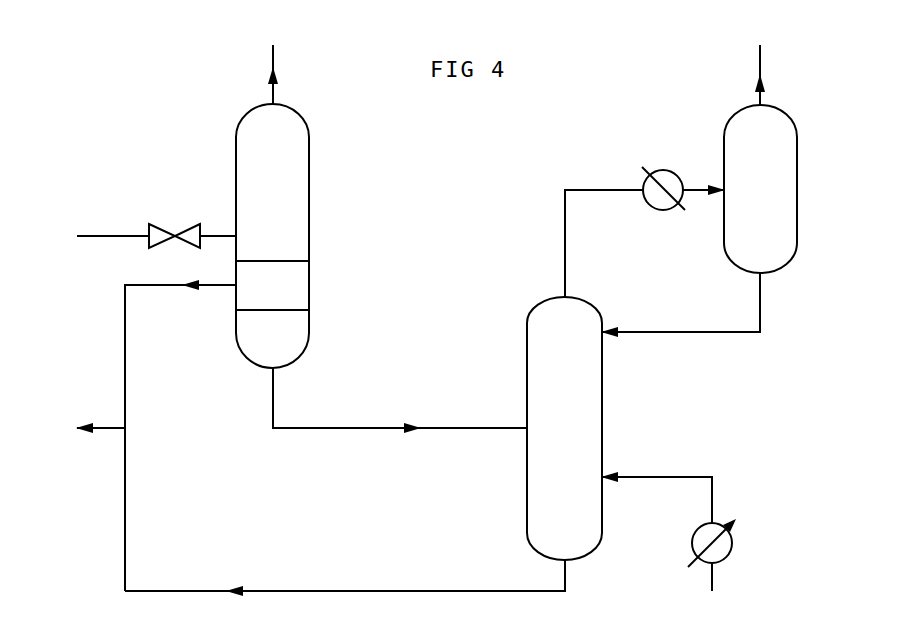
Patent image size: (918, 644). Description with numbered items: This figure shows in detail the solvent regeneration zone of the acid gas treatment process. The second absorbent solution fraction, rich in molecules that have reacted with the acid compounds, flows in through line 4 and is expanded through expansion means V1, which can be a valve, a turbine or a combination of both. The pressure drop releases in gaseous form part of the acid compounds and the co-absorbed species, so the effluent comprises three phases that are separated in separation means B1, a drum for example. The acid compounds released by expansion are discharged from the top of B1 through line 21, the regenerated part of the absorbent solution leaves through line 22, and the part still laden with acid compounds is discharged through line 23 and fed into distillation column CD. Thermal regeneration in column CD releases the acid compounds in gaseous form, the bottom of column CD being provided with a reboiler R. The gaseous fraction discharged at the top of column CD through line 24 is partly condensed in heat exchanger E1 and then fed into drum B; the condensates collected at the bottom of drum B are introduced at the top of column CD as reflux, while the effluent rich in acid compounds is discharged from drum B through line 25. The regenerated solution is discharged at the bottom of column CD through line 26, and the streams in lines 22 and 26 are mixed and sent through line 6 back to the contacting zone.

The line 4 is at (100, 236).
The line 21 is at (276, 62).
The line 22 is at (153, 287).
The line 23 is at (338, 430).
The line 24 is at (563, 212).
The line 25 is at (763, 60).
The line 26 is at (197, 591).
The line 6 is at (110, 430).
The expansion means V1 is at (174, 223).
The separation means B1 is at (309, 193).
The drum B is at (797, 152).
The heat exchanger E1 is at (683, 174).
The distillation column CD is at (602, 370).
The reboiler R is at (679, 531).